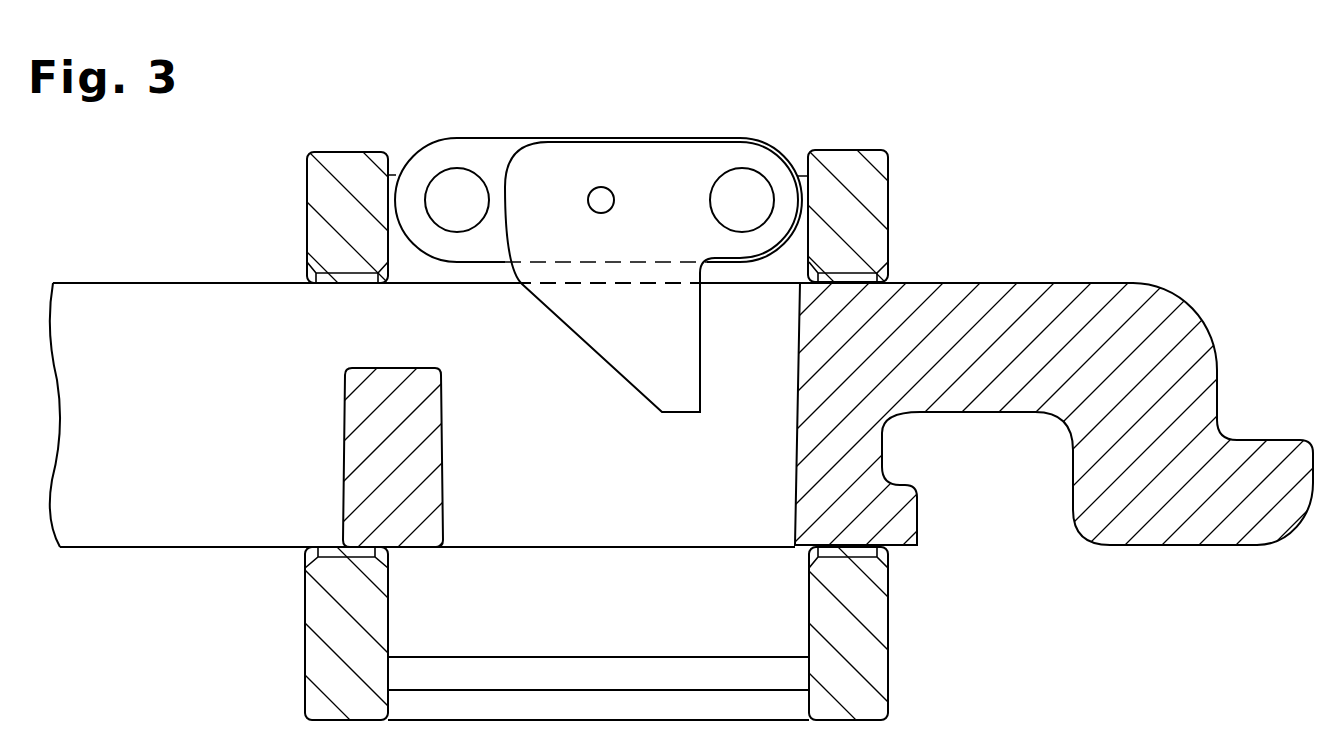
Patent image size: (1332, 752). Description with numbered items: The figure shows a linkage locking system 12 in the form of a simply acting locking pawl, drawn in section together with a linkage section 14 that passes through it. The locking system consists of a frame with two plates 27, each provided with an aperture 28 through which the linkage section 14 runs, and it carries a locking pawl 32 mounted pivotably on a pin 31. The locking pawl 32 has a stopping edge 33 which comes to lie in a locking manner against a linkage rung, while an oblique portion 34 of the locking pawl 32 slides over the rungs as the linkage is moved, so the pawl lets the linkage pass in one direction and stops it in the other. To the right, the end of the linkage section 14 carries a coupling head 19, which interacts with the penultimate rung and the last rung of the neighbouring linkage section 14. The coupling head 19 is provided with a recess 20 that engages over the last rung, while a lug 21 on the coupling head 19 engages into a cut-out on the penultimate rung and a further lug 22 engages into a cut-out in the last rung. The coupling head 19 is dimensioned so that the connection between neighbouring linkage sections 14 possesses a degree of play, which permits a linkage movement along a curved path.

The belt retractor / locking device assembly 12 is at (914, 165).
The linkage section 14 is at (146, 292).
The coupling head 19 is at (1065, 300).
The recess 20 is at (1030, 475).
The lug 21 is at (1233, 500).
The lug 22 is at (898, 507).
The plate 27 is at (330, 202).
The aperture 28 is at (338, 285).
The pin 31 is at (742, 192).
The locking pawl 32 is at (645, 170).
The stopping edge 33 is at (703, 367).
The oblique portion 34 is at (605, 363).